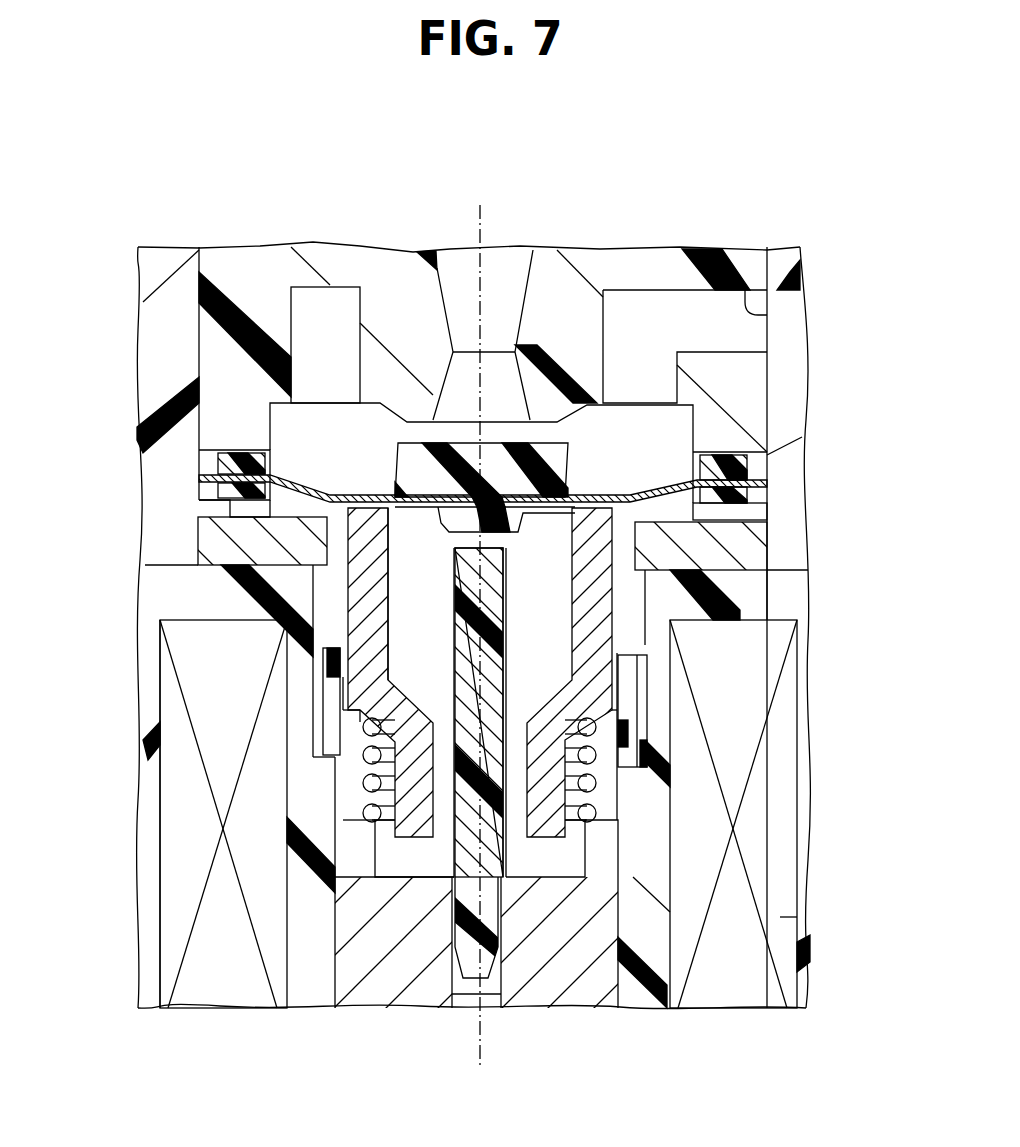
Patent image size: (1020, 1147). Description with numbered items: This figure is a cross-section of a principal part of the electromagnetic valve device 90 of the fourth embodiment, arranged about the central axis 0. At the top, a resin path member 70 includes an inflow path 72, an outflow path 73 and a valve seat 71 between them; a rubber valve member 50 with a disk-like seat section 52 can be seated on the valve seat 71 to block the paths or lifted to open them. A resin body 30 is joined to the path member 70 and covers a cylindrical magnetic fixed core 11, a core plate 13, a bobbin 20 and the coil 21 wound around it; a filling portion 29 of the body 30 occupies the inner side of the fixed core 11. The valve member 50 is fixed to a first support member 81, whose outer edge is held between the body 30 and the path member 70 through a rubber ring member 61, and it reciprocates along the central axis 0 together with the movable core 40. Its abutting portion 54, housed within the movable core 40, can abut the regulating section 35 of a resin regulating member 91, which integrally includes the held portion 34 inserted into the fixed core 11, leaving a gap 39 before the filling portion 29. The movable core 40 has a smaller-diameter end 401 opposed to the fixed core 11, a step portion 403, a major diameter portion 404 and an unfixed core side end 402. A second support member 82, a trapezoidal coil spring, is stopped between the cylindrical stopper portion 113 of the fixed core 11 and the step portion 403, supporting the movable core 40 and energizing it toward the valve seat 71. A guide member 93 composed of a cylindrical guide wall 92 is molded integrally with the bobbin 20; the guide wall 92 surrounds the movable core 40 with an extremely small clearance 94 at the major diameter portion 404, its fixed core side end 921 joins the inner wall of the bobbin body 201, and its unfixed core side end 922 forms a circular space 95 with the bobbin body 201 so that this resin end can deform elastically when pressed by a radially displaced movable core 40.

The central axis 0 is at (487, 228).
The outflow path 73 is at (440, 282).
The valve seat 71 is at (515, 405).
The path member 70 is at (648, 268).
The electromagnetic valve device 90 is at (800, 246).
The inflow path 72 is at (767, 315).
The body 30 is at (153, 318).
The valve member 50 is at (420, 460).
The seat section 52 is at (555, 458).
The rubber ring member 61 is at (757, 466).
The first support member 81 is at (370, 508).
The abutting portion 54 is at (640, 512).
The unfixed core side end 402 is at (200, 540).
The core plate 13 is at (735, 543).
The regulating section 35 is at (500, 572).
The movable core 40 is at (363, 592).
The major diameter portion 404 is at (372, 648).
The regulating member 91 is at (520, 622).
The clearance 94 is at (338, 650).
The unfixed core side end 922 is at (325, 673).
The space 95 is at (345, 710).
The second support member 82 is at (363, 808).
The fixed core side end 921 is at (350, 778).
The movable core end 401 is at (360, 857).
The step portion 403 is at (333, 748).
The guide member 93 is at (645, 650).
The guide wall 92 is at (628, 697).
The bobbin body 201 is at (665, 753).
The bobbin 20 is at (642, 1002).
The stopper portion 113 is at (605, 860).
The fixed core 11 is at (605, 977).
The held portion 34 is at (460, 955).
The gap 39 is at (465, 985).
The filling portion 29 is at (487, 1007).
The coil 21 is at (797, 910).